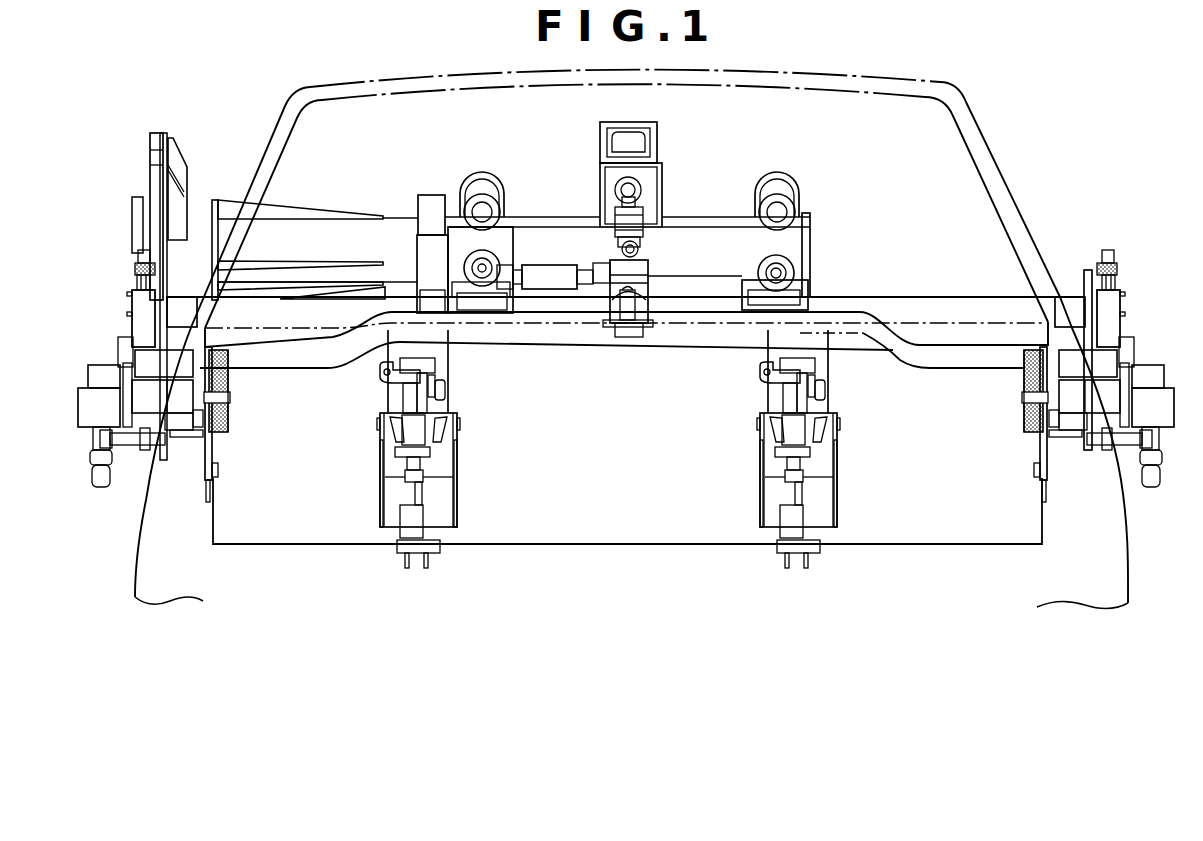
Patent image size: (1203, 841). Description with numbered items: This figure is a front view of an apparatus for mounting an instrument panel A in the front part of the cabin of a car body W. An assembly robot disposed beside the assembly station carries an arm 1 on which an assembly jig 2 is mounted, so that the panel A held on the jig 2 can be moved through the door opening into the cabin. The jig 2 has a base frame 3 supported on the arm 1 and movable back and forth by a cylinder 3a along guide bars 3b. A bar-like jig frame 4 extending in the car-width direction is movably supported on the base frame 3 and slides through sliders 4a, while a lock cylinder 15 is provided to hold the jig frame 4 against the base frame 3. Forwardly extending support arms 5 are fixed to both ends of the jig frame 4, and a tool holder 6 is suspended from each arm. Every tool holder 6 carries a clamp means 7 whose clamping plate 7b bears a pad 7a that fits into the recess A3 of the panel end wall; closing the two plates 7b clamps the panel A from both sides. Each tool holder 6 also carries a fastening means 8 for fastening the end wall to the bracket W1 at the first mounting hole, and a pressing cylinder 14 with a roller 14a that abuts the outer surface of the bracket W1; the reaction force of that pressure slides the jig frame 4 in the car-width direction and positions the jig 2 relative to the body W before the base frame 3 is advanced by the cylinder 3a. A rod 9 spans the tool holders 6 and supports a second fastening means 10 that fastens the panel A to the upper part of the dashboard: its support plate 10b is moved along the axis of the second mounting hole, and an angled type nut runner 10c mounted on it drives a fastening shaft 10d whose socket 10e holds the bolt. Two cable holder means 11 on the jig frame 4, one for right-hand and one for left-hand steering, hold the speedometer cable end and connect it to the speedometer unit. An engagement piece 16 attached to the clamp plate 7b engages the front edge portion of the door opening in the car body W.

The arm 1 is at (398, 218).
The assembly jig 2 is at (117, 321).
The base frame 3 is at (582, 232).
The cylinder 3a is at (642, 144).
The guide bars 3b is at (487, 205).
The jig frame 4 is at (960, 300).
The sliders 4a is at (476, 312).
The support arms 5 is at (168, 292).
The tool holder 6 is at (168, 450).
The clamp means 7 is at (200, 474).
The pad 7a is at (230, 419).
The clamping plate 7b is at (206, 503).
The fastening means 8 is at (88, 436).
The rod 9 is at (481, 309).
The second fastening means 10 is at (652, 329).
The support plate 10b is at (650, 282).
The angled type nut runner 10c is at (553, 268).
The fastening shaft 10d is at (612, 326).
The socket 10e is at (628, 338).
The cable holder means 11 is at (372, 370).
The pressing cylinder 14 is at (140, 393).
The roller 14a is at (231, 398).
The lock cylinder 15 is at (430, 200).
The engagement piece 16 is at (218, 476).
The instrument panel A is at (624, 549).
The recess A3 is at (233, 433).
The car body W is at (1008, 187).
The brackets W1 is at (238, 378).